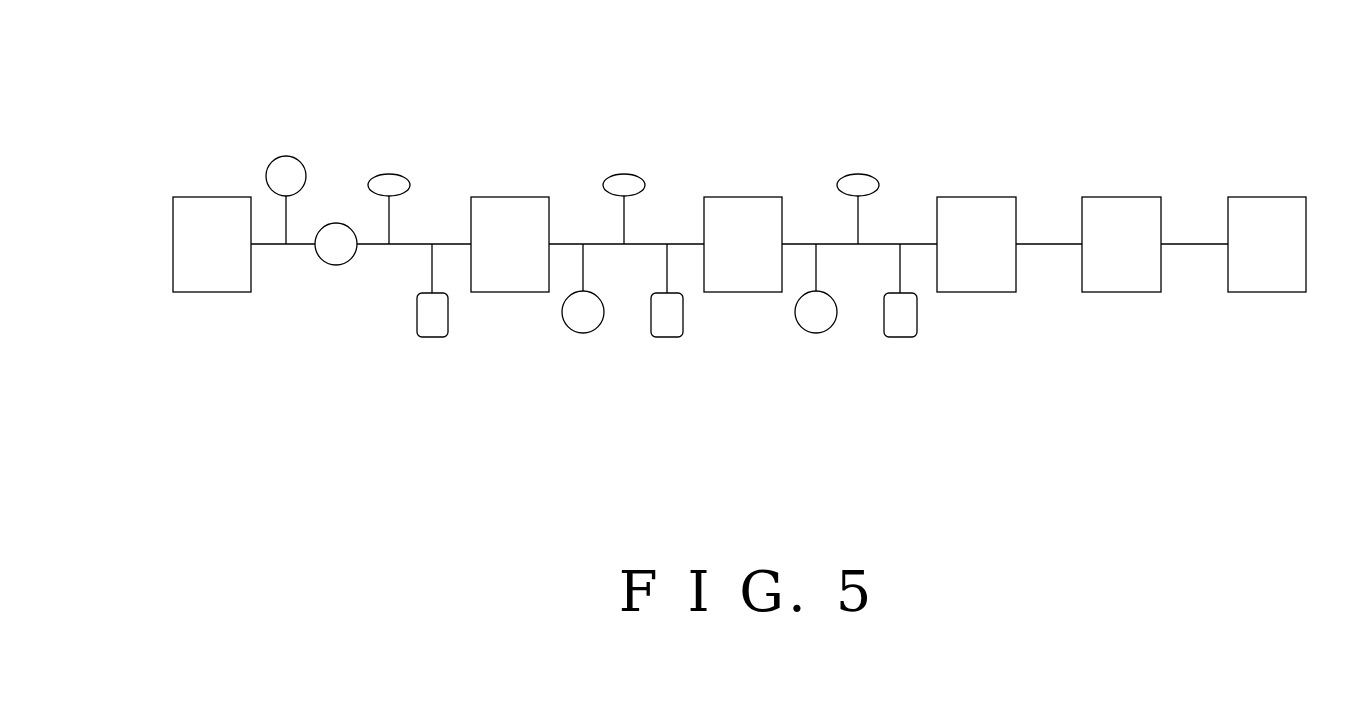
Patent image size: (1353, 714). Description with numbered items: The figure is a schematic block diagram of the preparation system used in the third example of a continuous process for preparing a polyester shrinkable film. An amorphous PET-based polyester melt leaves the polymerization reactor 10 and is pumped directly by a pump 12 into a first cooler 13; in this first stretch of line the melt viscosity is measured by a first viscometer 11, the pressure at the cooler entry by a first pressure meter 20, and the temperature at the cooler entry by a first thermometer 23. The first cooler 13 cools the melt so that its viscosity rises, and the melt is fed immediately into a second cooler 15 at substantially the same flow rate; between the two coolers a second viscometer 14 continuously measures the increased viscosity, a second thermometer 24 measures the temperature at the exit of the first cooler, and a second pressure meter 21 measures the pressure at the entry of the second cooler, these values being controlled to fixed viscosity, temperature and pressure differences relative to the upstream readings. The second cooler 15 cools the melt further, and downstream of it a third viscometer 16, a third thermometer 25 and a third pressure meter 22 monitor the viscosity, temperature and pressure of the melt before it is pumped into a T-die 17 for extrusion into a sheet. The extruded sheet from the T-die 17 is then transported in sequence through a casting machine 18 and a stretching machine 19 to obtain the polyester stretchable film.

The polymerization reactor 10 is at (212, 197).
The first viscometer 11 is at (286, 156).
The pump 12 is at (336, 265).
The first cooler 13 is at (508, 197).
The second viscometer 14 is at (583, 333).
The second cooler 15 is at (742, 197).
The third viscometer 16 is at (816, 333).
The T-die 17 is at (975, 197).
The casting machine 18 is at (1122, 197).
The stretching machine 19 is at (1266, 197).
The first pressure meter 20 is at (430, 337).
The second pressure meter 21 is at (665, 337).
The third pressure meter 22 is at (898, 337).
The first thermometer 23 is at (389, 174).
The second thermometer 24 is at (624, 174).
The third thermometer 25 is at (857, 174).